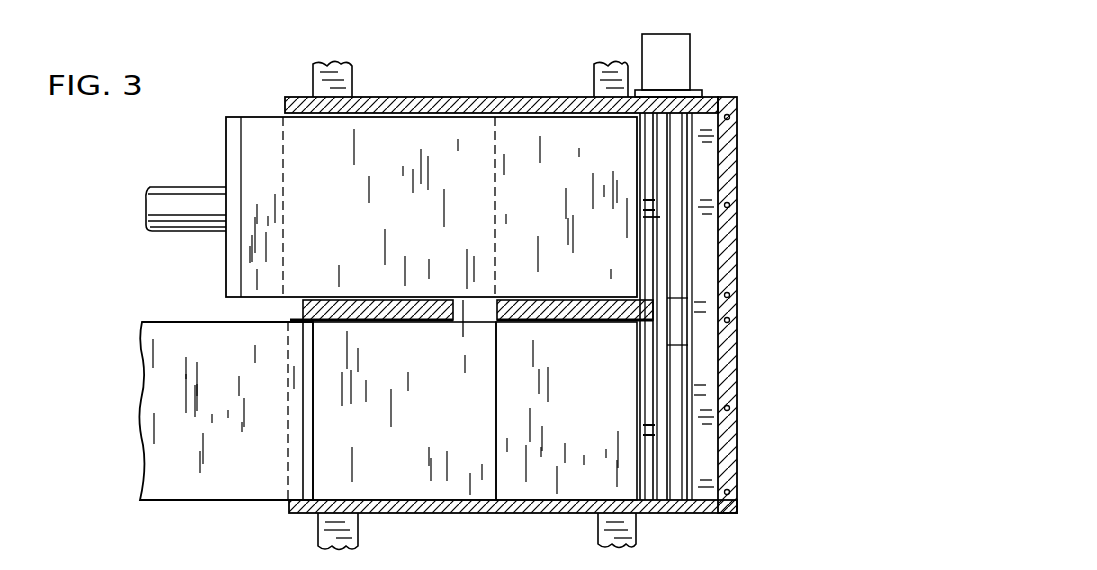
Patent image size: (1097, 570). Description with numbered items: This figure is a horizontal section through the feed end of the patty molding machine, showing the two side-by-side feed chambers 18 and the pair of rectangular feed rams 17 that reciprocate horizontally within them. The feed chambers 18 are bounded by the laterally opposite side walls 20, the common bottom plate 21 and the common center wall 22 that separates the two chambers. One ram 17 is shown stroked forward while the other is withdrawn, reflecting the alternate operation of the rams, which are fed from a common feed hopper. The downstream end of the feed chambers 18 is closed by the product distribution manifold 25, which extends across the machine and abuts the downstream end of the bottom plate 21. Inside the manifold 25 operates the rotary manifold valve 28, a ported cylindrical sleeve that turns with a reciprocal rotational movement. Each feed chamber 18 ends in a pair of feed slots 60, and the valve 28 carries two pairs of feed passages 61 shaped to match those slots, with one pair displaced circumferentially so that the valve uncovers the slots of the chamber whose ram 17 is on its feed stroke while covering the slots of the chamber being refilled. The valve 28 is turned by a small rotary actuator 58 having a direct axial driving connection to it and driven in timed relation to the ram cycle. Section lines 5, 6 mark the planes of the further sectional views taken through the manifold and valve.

The feed ram 17 is at (258, 135).
The feed chamber 18 is at (416, 470).
The side wall 20 is at (455, 108).
The bottom plate 21 is at (552, 455).
The center wall 22 is at (390, 313).
The product distribution manifold 25 is at (708, 503).
The rotary manifold valve 28 is at (667, 447).
The rotary actuator 58 is at (676, 72).
The feed slot 60 is at (650, 205).
The feed passage 61 is at (655, 218).
The section line 5 is at (612, 235).
The section line 6 is at (612, 361).